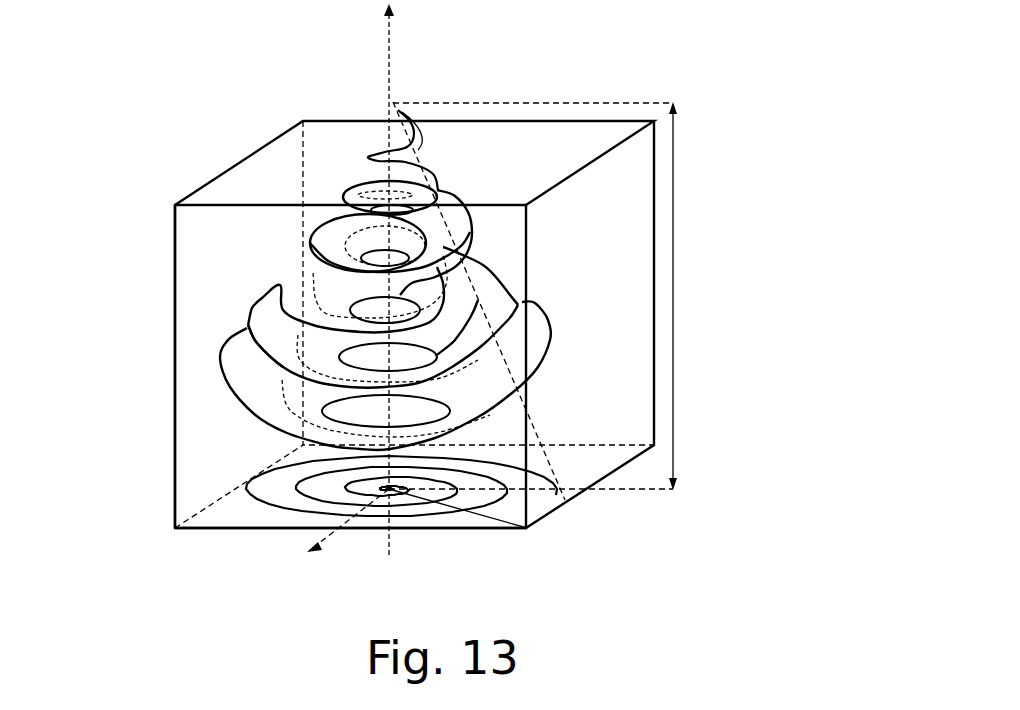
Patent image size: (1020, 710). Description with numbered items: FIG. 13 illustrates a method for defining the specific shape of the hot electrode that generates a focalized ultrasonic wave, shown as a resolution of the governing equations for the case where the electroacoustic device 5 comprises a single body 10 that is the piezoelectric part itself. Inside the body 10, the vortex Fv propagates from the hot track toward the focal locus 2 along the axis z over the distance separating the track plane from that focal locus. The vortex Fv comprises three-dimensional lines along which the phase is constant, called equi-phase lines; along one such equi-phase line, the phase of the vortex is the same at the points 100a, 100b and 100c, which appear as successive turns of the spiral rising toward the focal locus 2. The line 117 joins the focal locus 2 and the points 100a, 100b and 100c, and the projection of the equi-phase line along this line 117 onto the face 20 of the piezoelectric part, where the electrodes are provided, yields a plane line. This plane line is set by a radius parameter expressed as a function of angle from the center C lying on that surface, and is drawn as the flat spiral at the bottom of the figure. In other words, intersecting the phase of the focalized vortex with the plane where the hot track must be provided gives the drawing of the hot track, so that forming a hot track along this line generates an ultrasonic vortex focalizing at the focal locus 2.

The focal locus 2 is at (393, 103).
The system 5 is at (142, 232).
The body 10 is at (213, 307).
The face of the piezoelectric part 20 is at (197, 532).
The axis Z z is at (390, 45).
The point on equi-phase line 100a is at (497, 262).
The point on equi-phase line 100b is at (520, 307).
The point on equi-phase line 100c is at (518, 365).
The projection line 117 is at (453, 278).
The vortex Fv is at (199, 385).
The center C is at (390, 497).